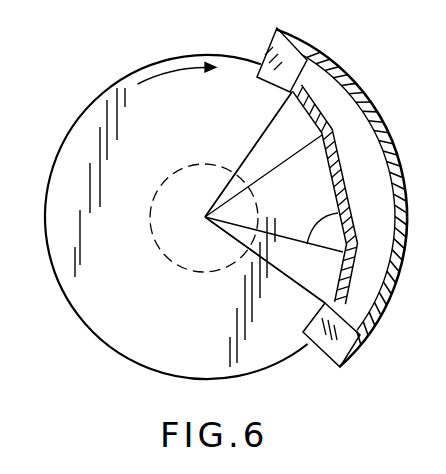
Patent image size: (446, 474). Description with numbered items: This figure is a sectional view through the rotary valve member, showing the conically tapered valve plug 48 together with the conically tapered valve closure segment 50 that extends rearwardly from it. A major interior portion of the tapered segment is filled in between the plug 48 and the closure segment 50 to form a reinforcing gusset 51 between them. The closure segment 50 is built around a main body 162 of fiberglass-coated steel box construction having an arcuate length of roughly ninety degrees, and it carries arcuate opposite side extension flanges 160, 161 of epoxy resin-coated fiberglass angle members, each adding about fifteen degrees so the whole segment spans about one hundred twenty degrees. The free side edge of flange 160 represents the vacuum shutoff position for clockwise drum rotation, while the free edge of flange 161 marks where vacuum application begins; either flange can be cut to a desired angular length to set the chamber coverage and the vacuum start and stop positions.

The valve plug 48 is at (93, 100).
The valve closure segment 50 is at (363, 87).
The reinforcing gusset 51 is at (296, 207).
The extension flange 160 is at (266, 50).
The extension flange 161 is at (310, 343).
The main body 162 is at (313, 240).